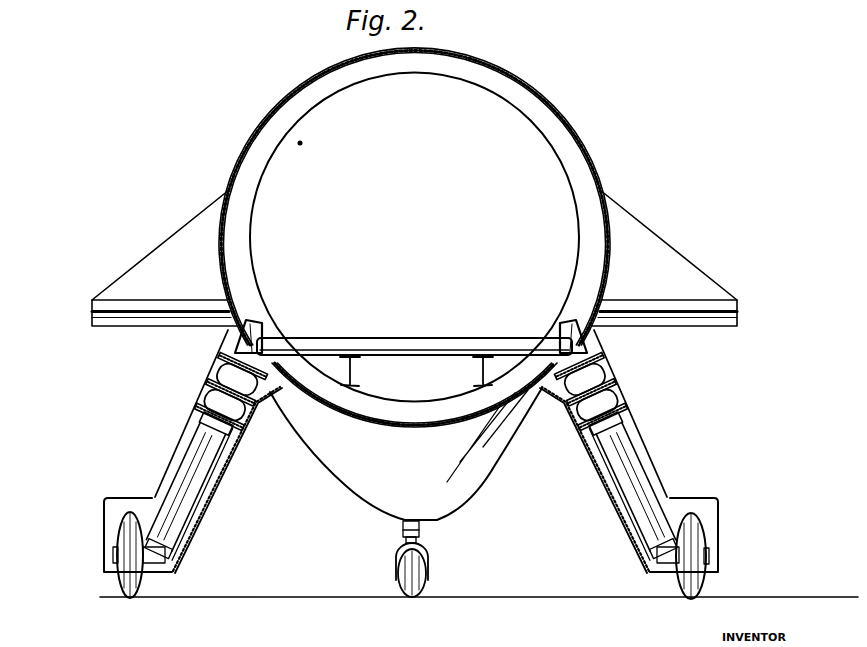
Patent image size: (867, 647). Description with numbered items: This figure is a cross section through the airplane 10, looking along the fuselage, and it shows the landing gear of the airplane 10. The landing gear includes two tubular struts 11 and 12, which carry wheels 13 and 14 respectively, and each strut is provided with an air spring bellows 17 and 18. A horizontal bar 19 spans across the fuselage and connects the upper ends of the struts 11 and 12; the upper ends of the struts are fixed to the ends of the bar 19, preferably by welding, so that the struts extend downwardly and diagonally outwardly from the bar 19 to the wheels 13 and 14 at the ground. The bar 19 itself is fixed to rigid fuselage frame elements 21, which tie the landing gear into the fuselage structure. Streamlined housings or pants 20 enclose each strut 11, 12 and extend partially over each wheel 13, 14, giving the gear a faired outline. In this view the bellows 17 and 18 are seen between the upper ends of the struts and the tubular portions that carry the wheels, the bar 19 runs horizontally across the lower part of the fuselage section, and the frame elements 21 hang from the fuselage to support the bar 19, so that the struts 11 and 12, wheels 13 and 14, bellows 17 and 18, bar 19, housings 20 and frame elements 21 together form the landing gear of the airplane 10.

The airplane 10 is at (562, 101).
The tubular strut 11 is at (637, 460).
The tubular strut 12 is at (193, 455).
The wheel 13 is at (707, 528).
The wheel 14 is at (120, 536).
The air spring bellows 17 is at (613, 369).
The air spring bellows 18 is at (216, 371).
The horizontal bar 19 is at (403, 340).
The streamlined housings 20 is at (155, 482).
The rigid fuselage frame elements 21 is at (473, 373).